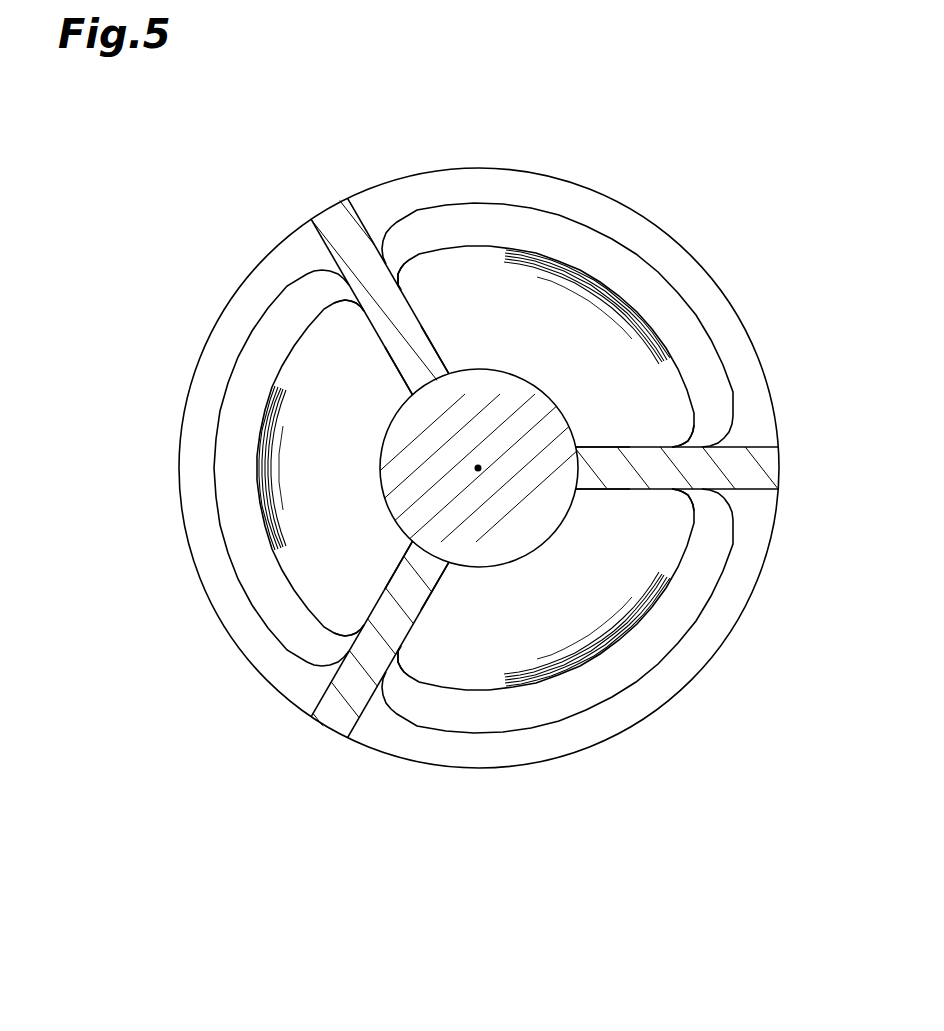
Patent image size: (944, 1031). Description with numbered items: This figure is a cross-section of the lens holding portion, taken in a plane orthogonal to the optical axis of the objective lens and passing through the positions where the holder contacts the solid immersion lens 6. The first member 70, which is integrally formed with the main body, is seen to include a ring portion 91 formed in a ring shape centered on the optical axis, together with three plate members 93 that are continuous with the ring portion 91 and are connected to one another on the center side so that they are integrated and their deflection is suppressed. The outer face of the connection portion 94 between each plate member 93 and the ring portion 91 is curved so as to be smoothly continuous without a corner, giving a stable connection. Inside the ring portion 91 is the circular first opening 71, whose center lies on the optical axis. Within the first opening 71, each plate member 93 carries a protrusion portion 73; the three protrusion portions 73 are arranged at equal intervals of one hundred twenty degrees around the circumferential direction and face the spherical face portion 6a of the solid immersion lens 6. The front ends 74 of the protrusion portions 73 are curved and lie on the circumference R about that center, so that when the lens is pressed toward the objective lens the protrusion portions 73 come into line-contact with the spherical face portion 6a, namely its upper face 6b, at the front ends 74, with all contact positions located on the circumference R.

The first member 70 is at (660, 222).
The connection portion 94 is at (320, 273).
The ring portion 91 is at (247, 567).
The plate member 93 is at (373, 307).
The first opening 71 is at (257, 508).
The protrusion portion 73 is at (403, 371).
The front end 74 is at (428, 383).
The solid immersion lens 6 is at (528, 535).
The spherical face portion 6a is at (630, 630).
The upper face 6b is at (633, 575).
The circumference R is at (377, 463).